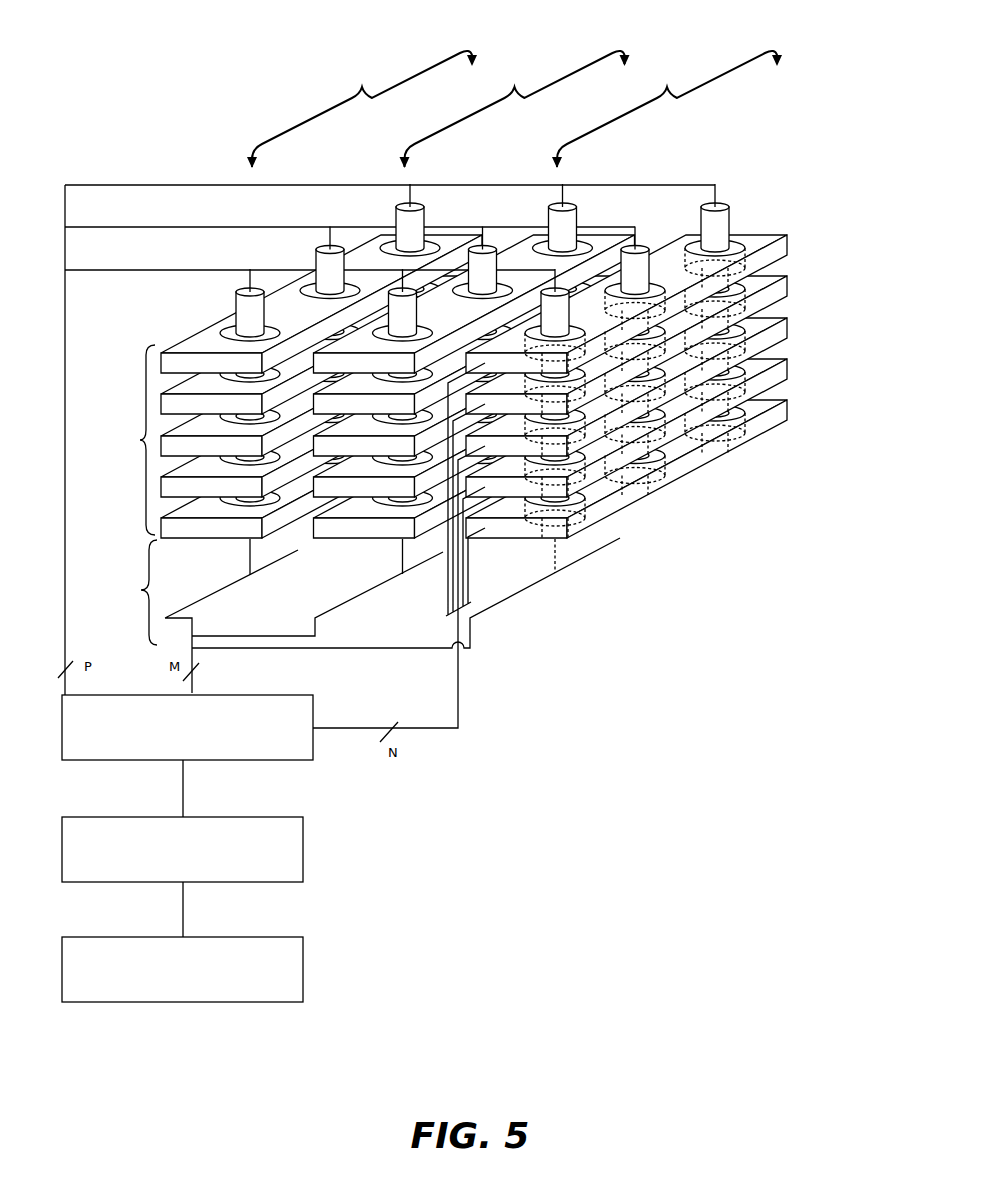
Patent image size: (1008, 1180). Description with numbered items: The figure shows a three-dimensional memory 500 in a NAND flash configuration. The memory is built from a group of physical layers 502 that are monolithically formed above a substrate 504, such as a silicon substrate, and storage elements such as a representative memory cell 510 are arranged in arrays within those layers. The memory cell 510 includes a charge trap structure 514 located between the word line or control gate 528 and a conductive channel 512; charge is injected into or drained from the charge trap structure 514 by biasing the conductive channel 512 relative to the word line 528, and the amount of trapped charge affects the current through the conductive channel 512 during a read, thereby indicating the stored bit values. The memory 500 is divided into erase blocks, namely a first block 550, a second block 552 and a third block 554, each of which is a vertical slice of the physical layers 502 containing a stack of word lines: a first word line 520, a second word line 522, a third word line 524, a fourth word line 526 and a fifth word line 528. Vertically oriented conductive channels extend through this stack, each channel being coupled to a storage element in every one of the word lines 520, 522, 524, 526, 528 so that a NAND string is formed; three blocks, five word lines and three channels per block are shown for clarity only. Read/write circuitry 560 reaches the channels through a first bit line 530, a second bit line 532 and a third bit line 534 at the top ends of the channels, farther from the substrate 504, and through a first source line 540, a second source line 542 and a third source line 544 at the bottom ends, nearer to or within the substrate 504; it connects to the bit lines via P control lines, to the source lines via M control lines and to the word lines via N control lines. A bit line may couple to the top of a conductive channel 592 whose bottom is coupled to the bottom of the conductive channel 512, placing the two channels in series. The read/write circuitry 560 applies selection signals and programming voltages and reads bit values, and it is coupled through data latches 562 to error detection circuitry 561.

The 3D memory 500 is at (156, 62).
The group of physical layers 502 is at (476, 386).
The substrate 504 is at (346, 615).
The memory cell 510 is at (711, 205).
The conductive channel 512 is at (725, 243).
The charge trap structure 514 is at (733, 236).
The first word line (WL0) 520 is at (788, 415).
The second word line (WL1) 522 is at (788, 374).
The third word line (WL2) 524 is at (788, 333).
The fourth word line (WL3) 526 is at (788, 291).
The fifth word line (WL4) 528 is at (788, 250).
The first bit line (BL0) 530 is at (181, 259).
The second bit line (BL1) 532 is at (259, 217).
The third bit line (BL2) 534 is at (339, 175).
The first source line (SL0) 540 is at (555, 597).
The second source line (SL1) 542 is at (400, 597).
The third source line (SL2) 544 is at (255, 598).
The first block (block 0) 550 is at (667, 109).
The second block (block 1) 552 is at (515, 109).
The third block (block 2) 554 is at (362, 109).
The read/write circuitry 560 is at (313, 760).
The error detection circuitry 561 is at (303, 1002).
The data latches 562 is at (303, 882).
The conductive channel 592 is at (547, 219).